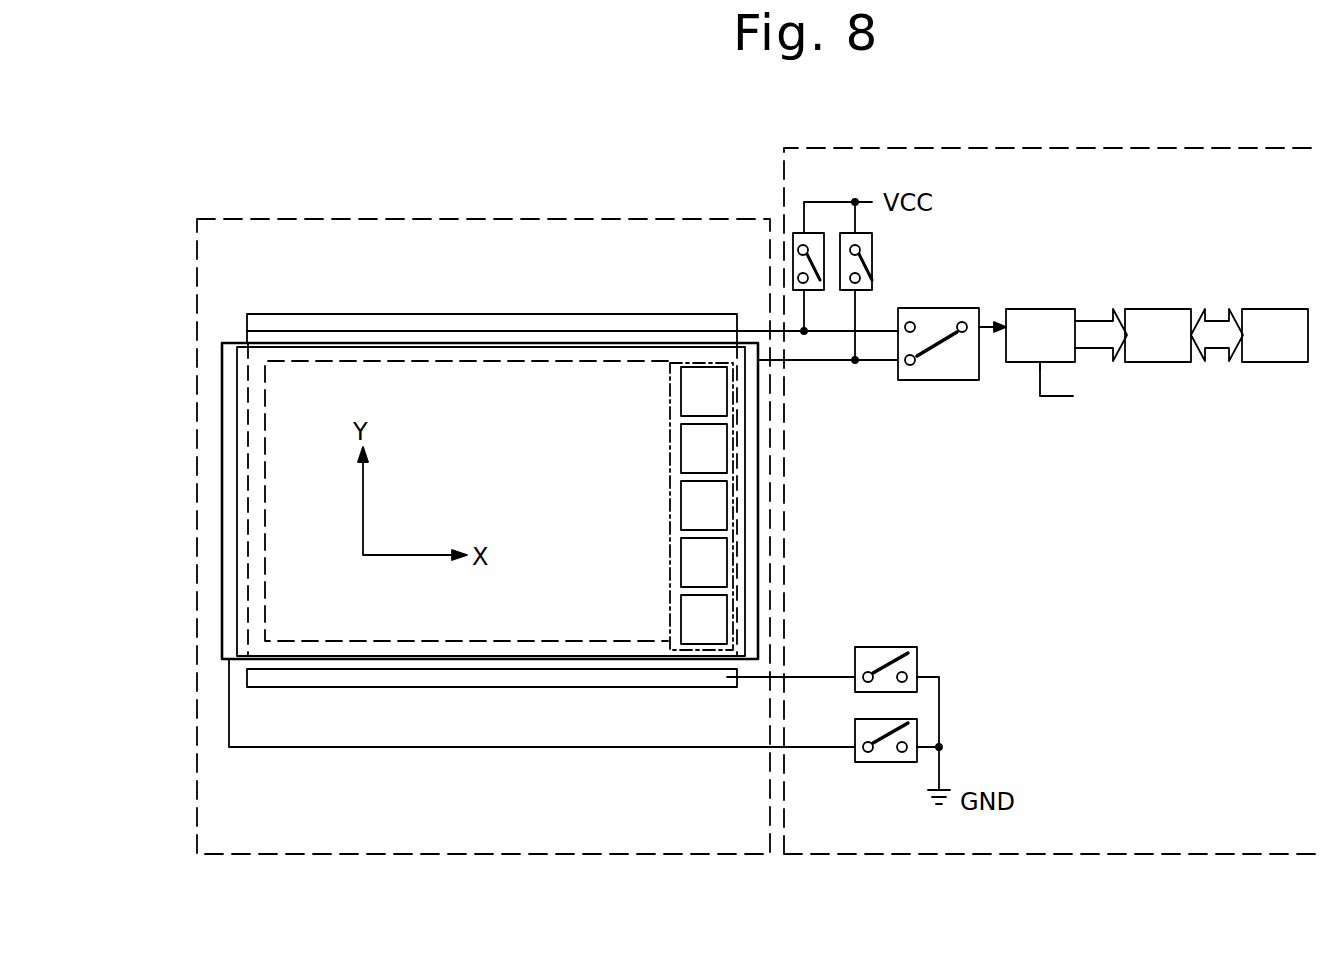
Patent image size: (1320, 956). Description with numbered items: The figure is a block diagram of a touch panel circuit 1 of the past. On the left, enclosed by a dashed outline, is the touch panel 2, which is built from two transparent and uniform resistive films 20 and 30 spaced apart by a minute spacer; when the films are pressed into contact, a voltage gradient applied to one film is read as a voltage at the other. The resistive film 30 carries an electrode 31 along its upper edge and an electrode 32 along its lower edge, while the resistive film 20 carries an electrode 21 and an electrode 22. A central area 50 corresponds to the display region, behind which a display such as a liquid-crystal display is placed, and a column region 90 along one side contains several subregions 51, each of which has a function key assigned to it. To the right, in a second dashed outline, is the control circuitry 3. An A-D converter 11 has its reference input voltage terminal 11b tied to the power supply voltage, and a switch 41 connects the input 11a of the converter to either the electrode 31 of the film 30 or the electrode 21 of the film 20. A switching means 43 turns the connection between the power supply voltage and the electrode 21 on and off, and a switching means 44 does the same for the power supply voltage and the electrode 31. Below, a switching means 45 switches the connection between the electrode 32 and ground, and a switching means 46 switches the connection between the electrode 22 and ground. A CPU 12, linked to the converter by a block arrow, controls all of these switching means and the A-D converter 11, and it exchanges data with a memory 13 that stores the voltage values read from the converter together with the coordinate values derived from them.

The touch panel circuit 1 is at (648, 124).
The touch panel 2 is at (490, 218).
The control circuit 3 is at (784, 176).
The A-D converter 11 is at (1030, 309).
The input 11a is at (1005, 322).
The reference input voltage terminal 11b is at (1034, 364).
The CPU 12 is at (1148, 309).
The memory 13 is at (1253, 309).
The resistive film 20 is at (222, 450).
The electrode 21 is at (783, 388).
The electrode 22 is at (229, 377).
The resistive film 30 is at (310, 313).
The electrode 31 is at (402, 330).
The electrode 32 is at (525, 678).
The switch 41 is at (920, 308).
The switching means 43 is at (872, 272).
The switching means 44 is at (814, 233).
The switching means 45 is at (888, 647).
The switching means 46 is at (878, 762).
The input area 50 is at (547, 361).
The subregions 51 is at (727, 392).
The key region 90 is at (690, 363).